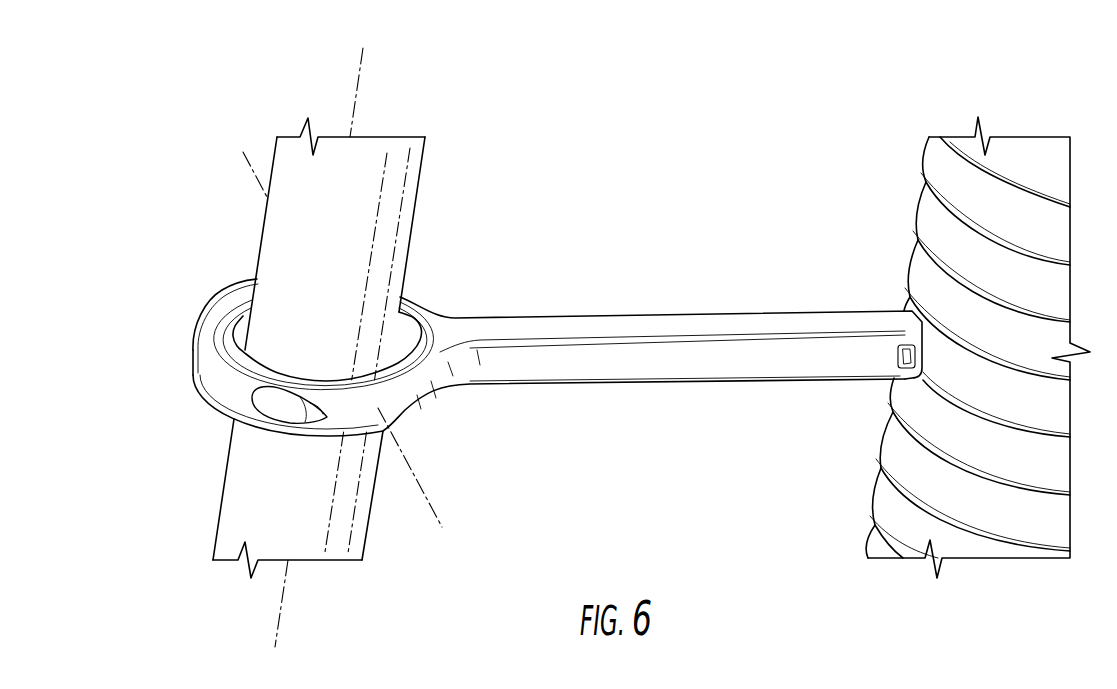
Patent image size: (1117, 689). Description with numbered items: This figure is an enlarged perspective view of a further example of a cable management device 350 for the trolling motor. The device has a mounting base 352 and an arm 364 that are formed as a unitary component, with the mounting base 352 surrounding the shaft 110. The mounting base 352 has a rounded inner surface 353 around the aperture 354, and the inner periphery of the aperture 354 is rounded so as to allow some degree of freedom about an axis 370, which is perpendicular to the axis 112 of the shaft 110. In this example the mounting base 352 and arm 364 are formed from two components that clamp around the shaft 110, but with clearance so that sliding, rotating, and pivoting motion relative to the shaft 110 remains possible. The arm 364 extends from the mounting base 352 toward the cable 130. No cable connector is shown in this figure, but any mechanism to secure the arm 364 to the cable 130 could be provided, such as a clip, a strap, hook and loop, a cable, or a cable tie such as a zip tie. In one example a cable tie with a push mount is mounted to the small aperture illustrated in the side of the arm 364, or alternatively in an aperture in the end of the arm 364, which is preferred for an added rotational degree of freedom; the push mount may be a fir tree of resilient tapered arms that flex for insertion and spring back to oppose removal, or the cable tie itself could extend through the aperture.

The shaft 110 is at (232, 482).
The axis 112 is at (283, 614).
The cable 130 is at (961, 142).
The cable management device 350 is at (153, 341).
The mounting base 352 is at (233, 292).
The bore 353 is at (233, 323).
The aperture 354 is at (369, 374).
The arm 364 is at (566, 356).
The axis 370 is at (427, 502).